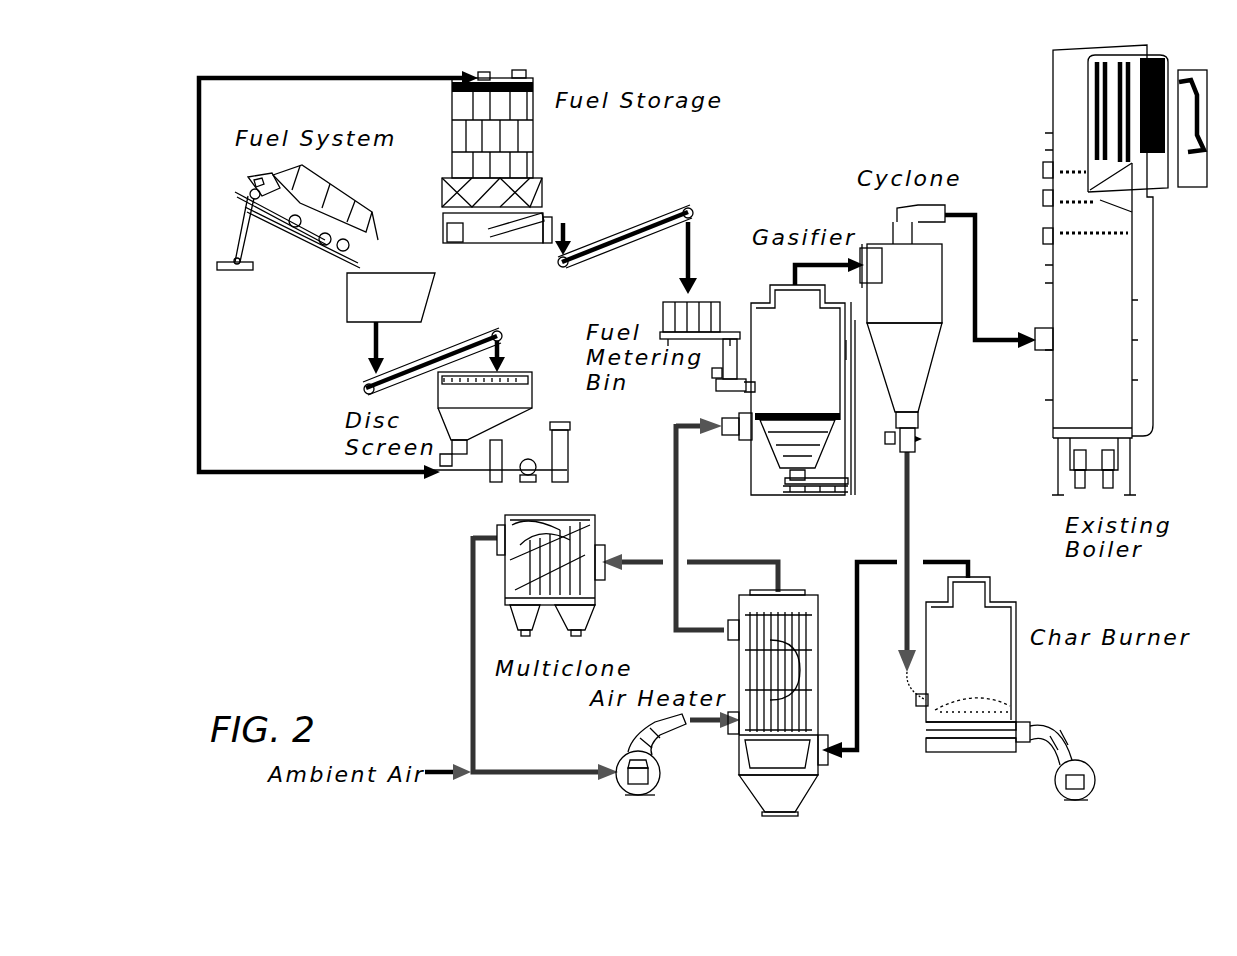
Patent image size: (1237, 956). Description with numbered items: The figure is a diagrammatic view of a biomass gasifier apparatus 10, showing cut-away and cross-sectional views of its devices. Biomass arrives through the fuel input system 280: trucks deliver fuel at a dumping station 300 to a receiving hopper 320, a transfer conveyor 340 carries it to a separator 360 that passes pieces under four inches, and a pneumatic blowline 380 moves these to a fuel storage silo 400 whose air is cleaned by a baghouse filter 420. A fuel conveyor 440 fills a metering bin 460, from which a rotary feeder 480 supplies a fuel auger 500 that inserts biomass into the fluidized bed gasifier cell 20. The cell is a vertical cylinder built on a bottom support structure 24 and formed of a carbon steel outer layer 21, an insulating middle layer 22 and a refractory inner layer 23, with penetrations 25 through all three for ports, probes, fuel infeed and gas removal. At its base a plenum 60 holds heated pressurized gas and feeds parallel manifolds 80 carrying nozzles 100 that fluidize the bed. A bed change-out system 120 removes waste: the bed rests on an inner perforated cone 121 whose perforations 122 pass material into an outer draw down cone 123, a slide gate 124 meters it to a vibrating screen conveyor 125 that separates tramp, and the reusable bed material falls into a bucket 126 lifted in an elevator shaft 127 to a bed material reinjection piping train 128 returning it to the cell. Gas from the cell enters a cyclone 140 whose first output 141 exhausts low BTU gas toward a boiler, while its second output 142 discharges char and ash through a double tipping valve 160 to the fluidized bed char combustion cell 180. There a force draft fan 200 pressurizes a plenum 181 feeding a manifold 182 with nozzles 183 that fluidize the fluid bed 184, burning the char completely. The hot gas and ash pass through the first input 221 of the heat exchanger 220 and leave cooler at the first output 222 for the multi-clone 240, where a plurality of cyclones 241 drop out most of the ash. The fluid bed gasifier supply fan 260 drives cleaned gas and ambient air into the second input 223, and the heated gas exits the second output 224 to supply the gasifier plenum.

The biomass gasifier apparatus 10 is at (382, 582).
The fluidized bed gasifier cell 20 is at (752, 297).
The outer layer 21 is at (851, 330).
The middle layer 22 is at (760, 318).
The inner layer 23 is at (760, 352).
The bottom support structure 24 is at (758, 495).
The penetrations 25 is at (832, 380).
The plenum 60 is at (745, 437).
The manifolds 80 is at (760, 404).
The nozzles 100 is at (810, 415).
The bed change-out system 120 is at (770, 485).
The inner perforated cone 121 is at (845, 468).
The perforations 122 is at (828, 450).
The outer draw down cone 123 is at (770, 455).
The slide gate 124 is at (780, 492).
The vibrating screen conveyor 125 is at (830, 490).
The bucket 126 is at (866, 330).
The elevator shaft 127 is at (858, 398).
The bed material reinjection piping train 128 is at (846, 365).
The cyclone 140 is at (942, 358).
The first output 141 is at (948, 205).
The second output 142 is at (915, 442).
The double tipping valve 160 is at (930, 412).
The fluidized bed char combustion cell 180 is at (1016, 594).
The plenum 181 is at (1025, 747).
The manifold 182 is at (970, 740).
The nozzles 183 is at (990, 715).
The fluid bed 184 is at (924, 708).
The force draft fan 200 is at (1093, 752).
The heat exchanger 220 is at (808, 795).
The first input 221 is at (830, 760).
The first output 222 is at (782, 592).
The second input 223 is at (736, 733).
The second output 224 is at (730, 625).
The multi-clone 240 is at (608, 537).
The cyclones 241 is at (598, 620).
The fluid bed gasifier supply fan 260 is at (620, 790).
The fuel input system 280 is at (283, 378).
The dumping station 300 is at (318, 250).
The receiving hopper 320 is at (387, 272).
The transfer conveyor 340 is at (437, 345).
The separator 360 is at (518, 365).
The pneumatic blowline 380 is at (262, 480).
The fuel storage silo 400 is at (540, 160).
The baghouse filter 420 is at (525, 72).
The fuel conveyor 440 is at (615, 215).
The metering bin 460 is at (662, 312).
The rotary feeder 480 is at (705, 385).
The fuel auger 500 is at (722, 390).